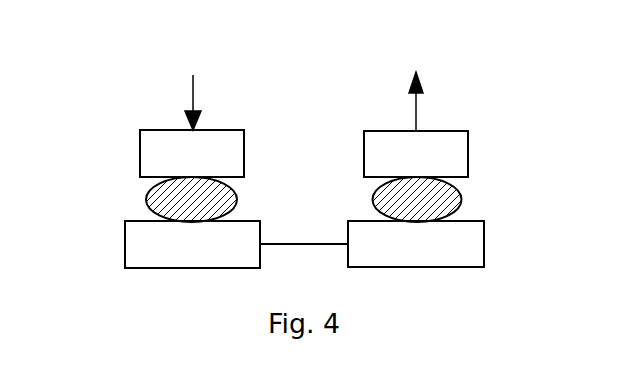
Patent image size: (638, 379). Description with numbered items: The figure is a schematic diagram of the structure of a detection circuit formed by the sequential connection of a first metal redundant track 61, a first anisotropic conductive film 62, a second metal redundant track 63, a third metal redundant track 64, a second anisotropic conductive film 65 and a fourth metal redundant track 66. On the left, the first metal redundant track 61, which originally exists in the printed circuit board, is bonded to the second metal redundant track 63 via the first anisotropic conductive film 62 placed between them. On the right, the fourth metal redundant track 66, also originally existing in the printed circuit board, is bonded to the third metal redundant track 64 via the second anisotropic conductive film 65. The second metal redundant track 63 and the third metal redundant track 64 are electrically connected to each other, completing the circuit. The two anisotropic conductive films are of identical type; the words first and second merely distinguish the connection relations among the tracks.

The first metal redundant track 61 is at (165, 119).
The first anisotropic conductive film 62 is at (211, 185).
The second metal redundant track 63 is at (151, 218).
The third metal redundant track 64 is at (454, 207).
The second anisotropic conductive film 65 is at (424, 146).
The fourth metal redundant track 66 is at (382, 119).